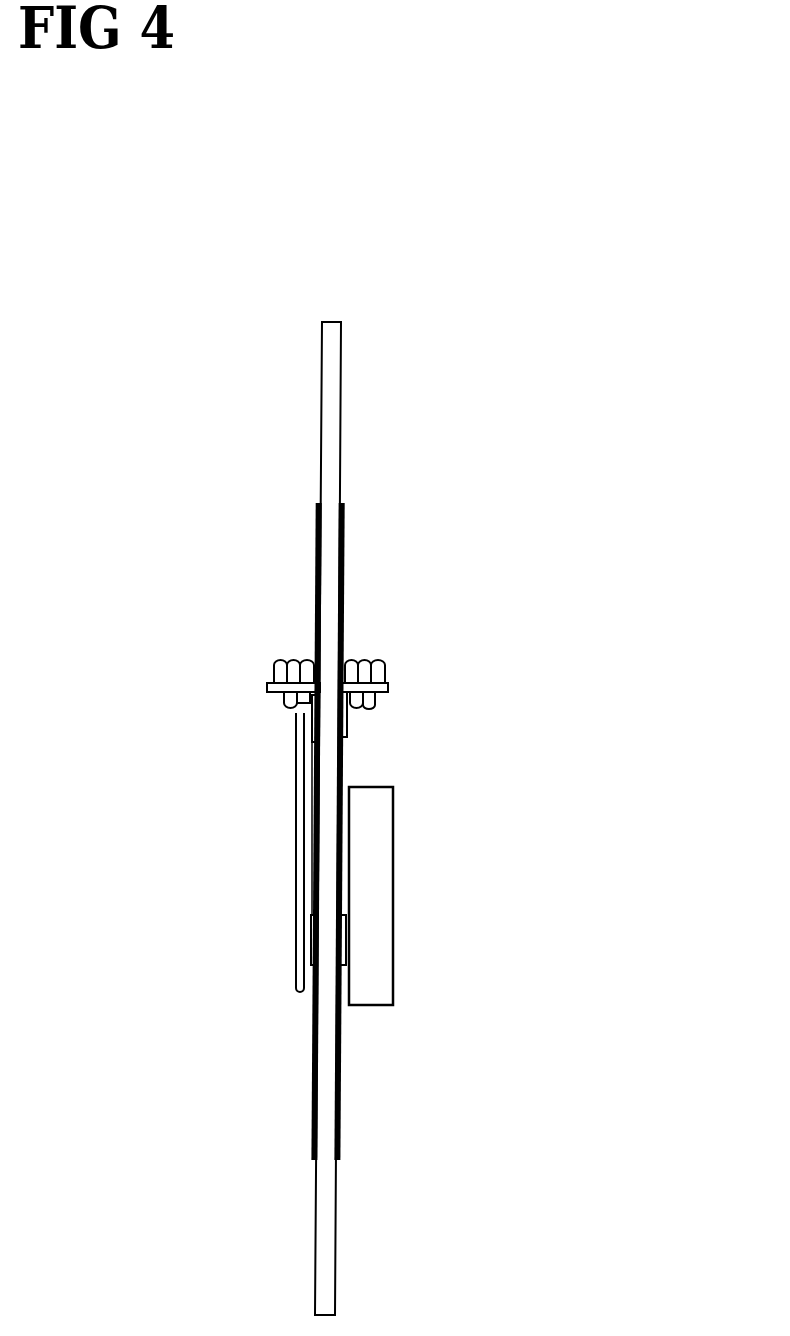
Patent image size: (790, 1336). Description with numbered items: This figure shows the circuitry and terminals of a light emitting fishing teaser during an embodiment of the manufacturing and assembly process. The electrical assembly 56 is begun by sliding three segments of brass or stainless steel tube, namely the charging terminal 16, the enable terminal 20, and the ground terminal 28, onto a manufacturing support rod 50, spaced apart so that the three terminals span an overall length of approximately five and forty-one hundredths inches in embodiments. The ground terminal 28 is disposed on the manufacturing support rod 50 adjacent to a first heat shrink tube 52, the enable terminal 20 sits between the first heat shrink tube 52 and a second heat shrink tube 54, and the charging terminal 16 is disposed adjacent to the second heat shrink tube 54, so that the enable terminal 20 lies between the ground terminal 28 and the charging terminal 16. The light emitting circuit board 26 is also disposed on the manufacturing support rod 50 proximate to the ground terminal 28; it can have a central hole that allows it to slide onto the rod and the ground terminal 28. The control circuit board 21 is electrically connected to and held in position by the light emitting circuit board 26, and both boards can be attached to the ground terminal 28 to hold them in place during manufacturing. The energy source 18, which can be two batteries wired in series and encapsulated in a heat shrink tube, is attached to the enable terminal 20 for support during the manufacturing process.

The electrical assembly 56 is at (420, 180).
The manufacturing support rod 50 is at (341, 443).
The ground terminal 28 is at (341, 578).
The charging terminal 16 is at (336, 1090).
The light emitting circuit board 26 is at (388, 687).
The first heat shrink tube 52 is at (347, 733).
The enable terminal 20 is at (341, 768).
The control circuit board 21 is at (295, 815).
The energy source 18 is at (393, 887).
The second heat shrink tube 54 is at (341, 943).